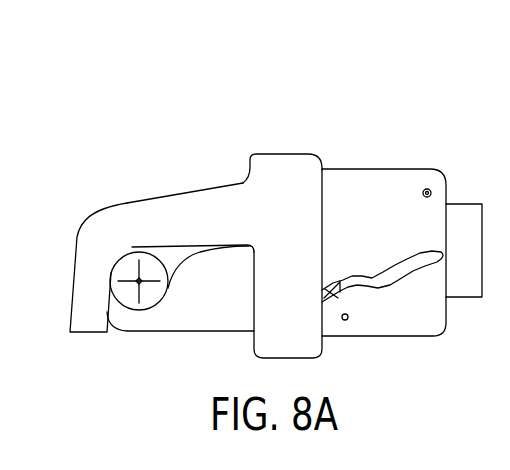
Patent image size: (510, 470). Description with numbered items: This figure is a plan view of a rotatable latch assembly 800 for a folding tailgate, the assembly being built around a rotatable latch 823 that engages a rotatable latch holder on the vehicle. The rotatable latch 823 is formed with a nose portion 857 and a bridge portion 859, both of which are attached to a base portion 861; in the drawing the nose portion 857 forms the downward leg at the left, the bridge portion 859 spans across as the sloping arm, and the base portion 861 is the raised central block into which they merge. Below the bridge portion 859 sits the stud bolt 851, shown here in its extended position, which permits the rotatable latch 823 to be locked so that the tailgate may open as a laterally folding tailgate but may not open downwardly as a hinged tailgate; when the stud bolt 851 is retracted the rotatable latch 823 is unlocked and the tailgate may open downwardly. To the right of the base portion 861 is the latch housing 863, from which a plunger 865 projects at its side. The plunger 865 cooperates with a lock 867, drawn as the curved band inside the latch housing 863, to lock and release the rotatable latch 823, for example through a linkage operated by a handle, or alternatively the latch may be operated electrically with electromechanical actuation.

The latch assembly 800 is at (136, 79).
The rotatable latch 823 is at (312, 137).
The stud bolt 851 is at (180, 332).
The nose portion 857 is at (77, 237).
The bridge portion 859 is at (124, 203).
The base portion 861 is at (258, 153).
The latch housing 863 is at (390, 168).
The plunger 865 is at (468, 203).
The lock 867 is at (378, 288).